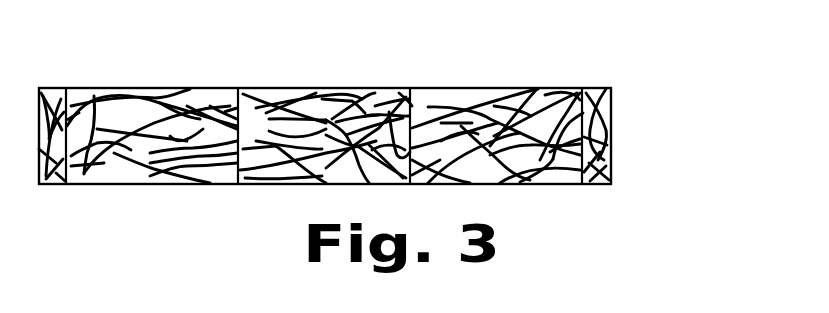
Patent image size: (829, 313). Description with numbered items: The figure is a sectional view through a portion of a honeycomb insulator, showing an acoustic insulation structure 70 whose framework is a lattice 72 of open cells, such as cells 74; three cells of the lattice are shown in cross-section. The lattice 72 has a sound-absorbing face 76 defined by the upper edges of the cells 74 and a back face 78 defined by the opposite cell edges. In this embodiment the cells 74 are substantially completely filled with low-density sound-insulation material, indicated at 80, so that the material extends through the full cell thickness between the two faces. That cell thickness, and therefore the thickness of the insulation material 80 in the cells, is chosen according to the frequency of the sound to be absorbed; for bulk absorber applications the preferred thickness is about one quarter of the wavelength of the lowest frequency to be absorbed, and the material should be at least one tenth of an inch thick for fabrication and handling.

The acoustic insulation structure 70 is at (589, 86).
The lattice 72 is at (241, 127).
The cells 74 is at (234, 110).
The sound-absorbing face 76 is at (413, 123).
The back face 78 is at (586, 186).
The insulation material 80 is at (97, 160).